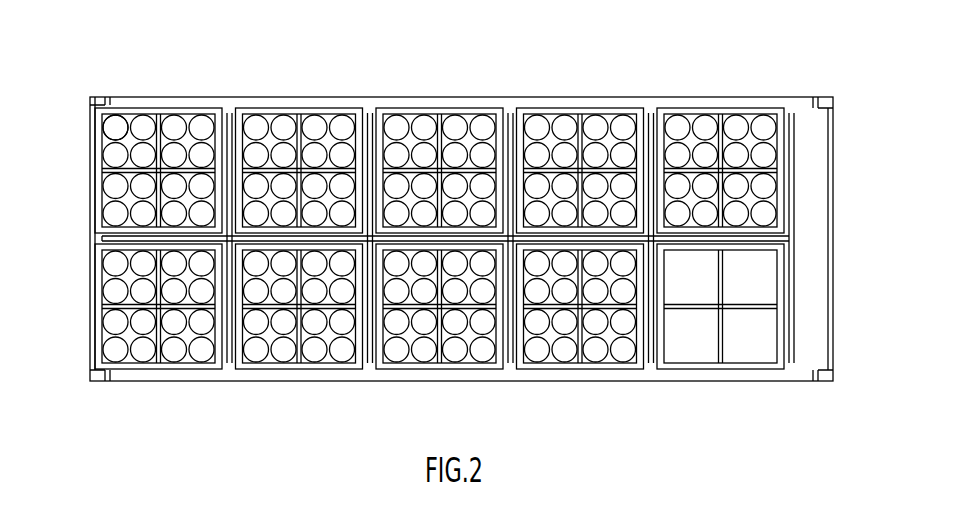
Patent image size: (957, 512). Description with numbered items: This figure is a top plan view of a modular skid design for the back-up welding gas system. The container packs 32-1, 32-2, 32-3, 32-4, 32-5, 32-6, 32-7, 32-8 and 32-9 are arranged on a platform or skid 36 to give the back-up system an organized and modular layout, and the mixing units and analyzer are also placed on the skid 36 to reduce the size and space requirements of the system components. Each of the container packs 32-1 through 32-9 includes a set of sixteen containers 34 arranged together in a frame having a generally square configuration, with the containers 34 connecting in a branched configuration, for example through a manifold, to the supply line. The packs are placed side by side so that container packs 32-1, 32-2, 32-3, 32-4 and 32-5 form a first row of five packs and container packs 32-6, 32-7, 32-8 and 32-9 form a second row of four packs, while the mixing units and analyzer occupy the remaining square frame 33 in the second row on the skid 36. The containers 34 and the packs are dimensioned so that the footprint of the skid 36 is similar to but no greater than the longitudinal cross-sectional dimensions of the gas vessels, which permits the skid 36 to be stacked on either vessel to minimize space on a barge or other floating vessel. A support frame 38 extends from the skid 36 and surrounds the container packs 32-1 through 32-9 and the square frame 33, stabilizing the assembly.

The container pack 32-1 is at (157, 108).
The container pack 32-2 is at (297, 108).
The container pack 32-3 is at (440, 108).
The container pack 32-4 is at (577, 108).
The container pack 32-5 is at (720, 108).
The container pack 32-6 is at (185, 369).
The container pack 32-7 is at (312, 369).
The container pack 32-8 is at (425, 369).
The container pack 32-9 is at (592, 369).
The square frame 33 is at (758, 347).
The container 34 is at (111, 125).
The skid 36 is at (818, 175).
The support frame 38 is at (832, 286).